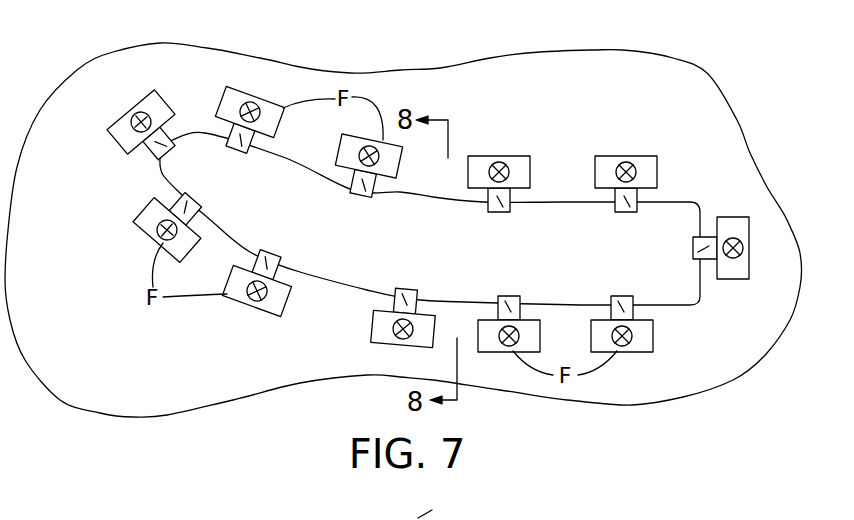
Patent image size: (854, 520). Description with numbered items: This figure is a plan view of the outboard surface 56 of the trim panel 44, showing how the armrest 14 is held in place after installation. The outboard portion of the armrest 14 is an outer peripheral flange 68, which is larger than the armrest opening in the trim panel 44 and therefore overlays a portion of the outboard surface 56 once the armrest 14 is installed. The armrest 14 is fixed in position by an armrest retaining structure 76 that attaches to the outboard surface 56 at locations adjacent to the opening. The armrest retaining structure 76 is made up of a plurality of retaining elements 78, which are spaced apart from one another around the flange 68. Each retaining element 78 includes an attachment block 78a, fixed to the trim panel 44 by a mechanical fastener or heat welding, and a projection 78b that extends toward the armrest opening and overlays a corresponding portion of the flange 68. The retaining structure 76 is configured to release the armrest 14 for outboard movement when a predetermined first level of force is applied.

The armrest 14 is at (202, 163).
The trim panel 44 is at (432, 70).
The outboard surface 56 is at (648, 107).
The flange 68 is at (157, 178).
The armrest retaining structure 76 is at (756, 228).
The retaining elements 78 is at (446, 204).
The attachment block 78a is at (450, 204).
The projection 78b is at (197, 205).